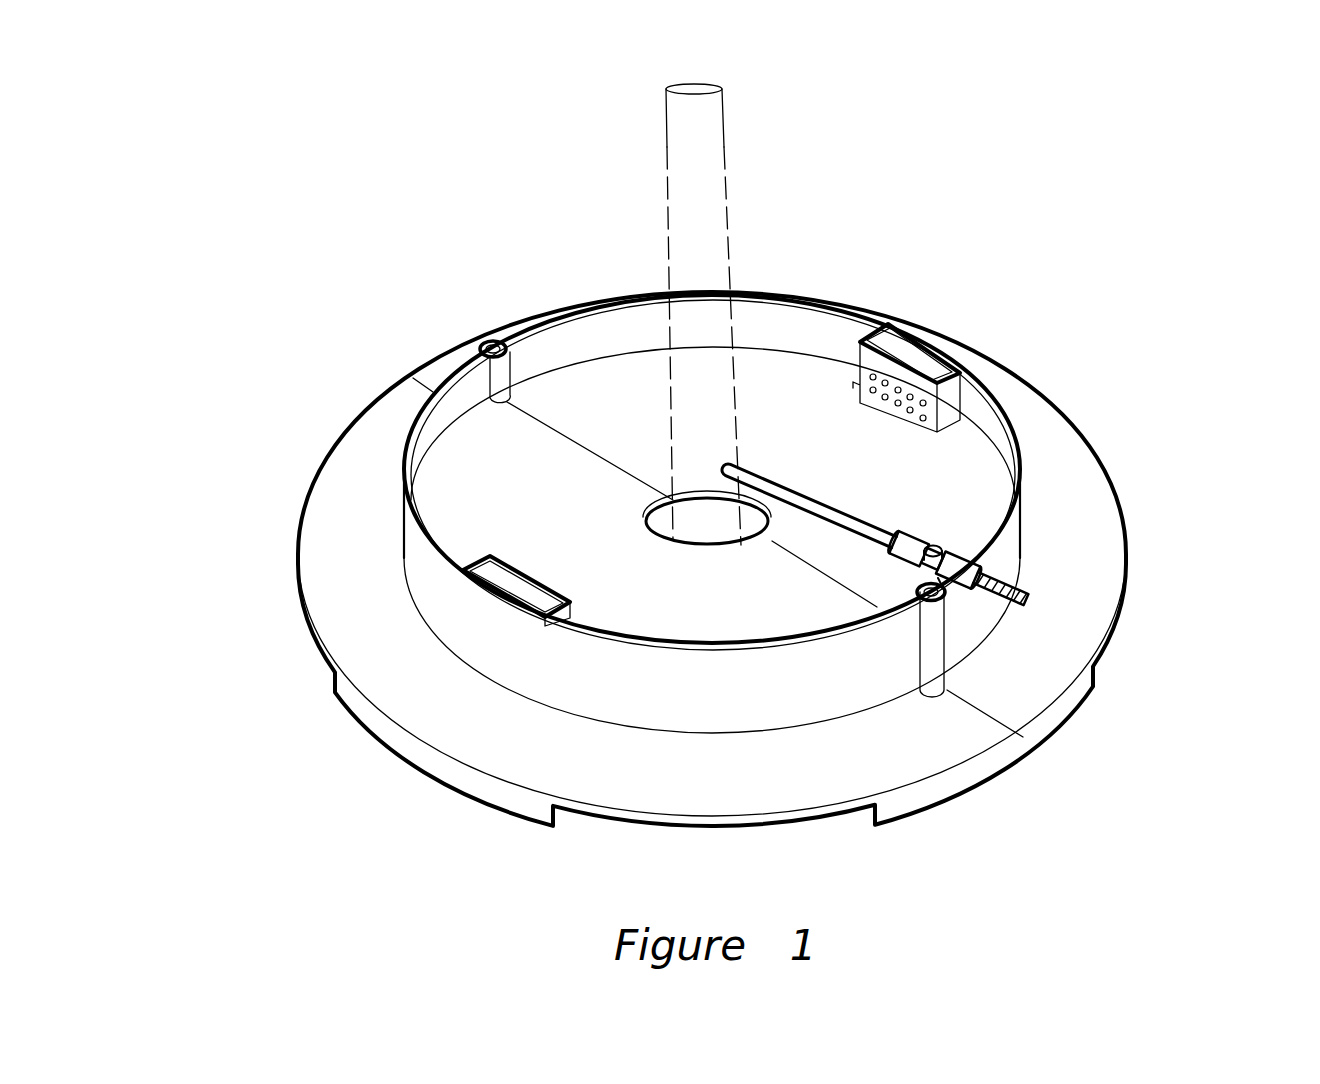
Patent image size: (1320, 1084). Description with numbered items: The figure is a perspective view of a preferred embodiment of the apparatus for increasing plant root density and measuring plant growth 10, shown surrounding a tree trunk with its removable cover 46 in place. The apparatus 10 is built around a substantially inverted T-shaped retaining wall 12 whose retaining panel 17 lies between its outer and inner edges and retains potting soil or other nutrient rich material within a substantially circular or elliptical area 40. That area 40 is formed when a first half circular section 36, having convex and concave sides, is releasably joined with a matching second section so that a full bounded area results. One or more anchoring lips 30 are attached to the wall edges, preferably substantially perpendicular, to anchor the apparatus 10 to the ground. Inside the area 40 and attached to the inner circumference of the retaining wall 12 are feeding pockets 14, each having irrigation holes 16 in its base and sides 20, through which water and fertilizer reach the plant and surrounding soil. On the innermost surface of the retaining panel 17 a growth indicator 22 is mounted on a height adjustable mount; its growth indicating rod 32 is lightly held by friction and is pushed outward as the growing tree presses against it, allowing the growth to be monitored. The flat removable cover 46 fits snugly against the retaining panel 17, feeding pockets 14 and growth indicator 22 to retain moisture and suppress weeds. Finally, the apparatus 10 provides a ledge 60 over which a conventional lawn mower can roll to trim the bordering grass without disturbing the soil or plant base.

The apparatus for increasing plant root density and measuring plant growth 10 is at (418, 335).
The retaining wall 12 is at (390, 635).
The feeding pocket 14 is at (917, 357).
The irrigation hole 16 is at (923, 402).
The retaining panel 17 is at (405, 532).
The sides 20 is at (900, 375).
The growth indicator 22 is at (997, 576).
The anchoring lip 30 is at (945, 570).
The growth indicating rod 32 is at (1030, 593).
The first half circular section 36 is at (1050, 448).
The area 40 is at (501, 488).
The removable cover 46 is at (618, 375).
The ledge 60 is at (327, 607).